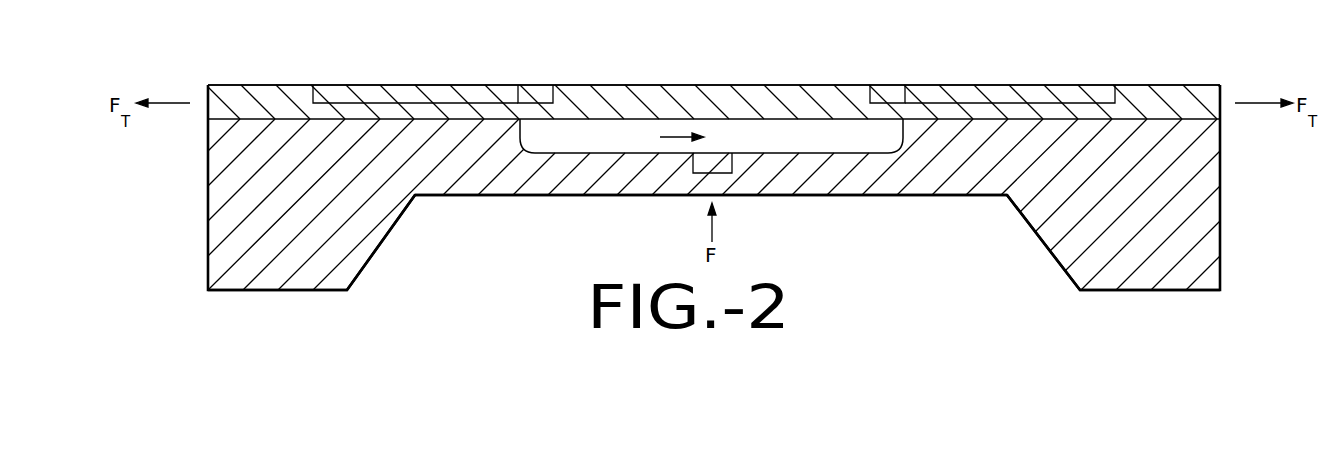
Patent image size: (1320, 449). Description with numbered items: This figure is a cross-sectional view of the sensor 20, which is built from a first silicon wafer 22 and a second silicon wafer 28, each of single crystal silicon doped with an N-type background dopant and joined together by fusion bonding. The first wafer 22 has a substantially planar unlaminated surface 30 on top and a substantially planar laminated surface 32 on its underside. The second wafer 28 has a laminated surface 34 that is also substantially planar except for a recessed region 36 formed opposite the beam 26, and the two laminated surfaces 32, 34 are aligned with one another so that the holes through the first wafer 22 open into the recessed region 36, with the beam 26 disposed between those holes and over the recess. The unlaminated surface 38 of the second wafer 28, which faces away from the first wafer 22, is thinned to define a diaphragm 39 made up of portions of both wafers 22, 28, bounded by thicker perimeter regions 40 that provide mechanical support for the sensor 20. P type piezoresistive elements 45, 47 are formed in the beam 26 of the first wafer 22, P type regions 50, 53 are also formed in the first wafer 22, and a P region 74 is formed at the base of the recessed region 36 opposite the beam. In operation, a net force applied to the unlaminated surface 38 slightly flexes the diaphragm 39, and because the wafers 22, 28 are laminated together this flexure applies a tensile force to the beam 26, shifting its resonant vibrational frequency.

The sensor 20 is at (549, 34).
The first silicon wafer 22 is at (1182, 103).
The beam 26 is at (670, 85).
The second silicon wafer 28 is at (828, 182).
The unlaminated surface 30 is at (228, 85).
The laminated surface 32 is at (285, 119).
The laminated surface 34 is at (476, 120).
The recessed region 36 is at (662, 137).
The unlaminated surface 38 is at (894, 195).
The diaphragm 39 is at (422, 60).
The thicker perimeter regions 40 is at (230, 282).
The piezoresistive element 45 is at (888, 85).
The piezoresistive element 47 is at (540, 85).
The P type region 50 is at (447, 85).
The P type region 53 is at (1000, 85).
The P region 74 is at (730, 174).